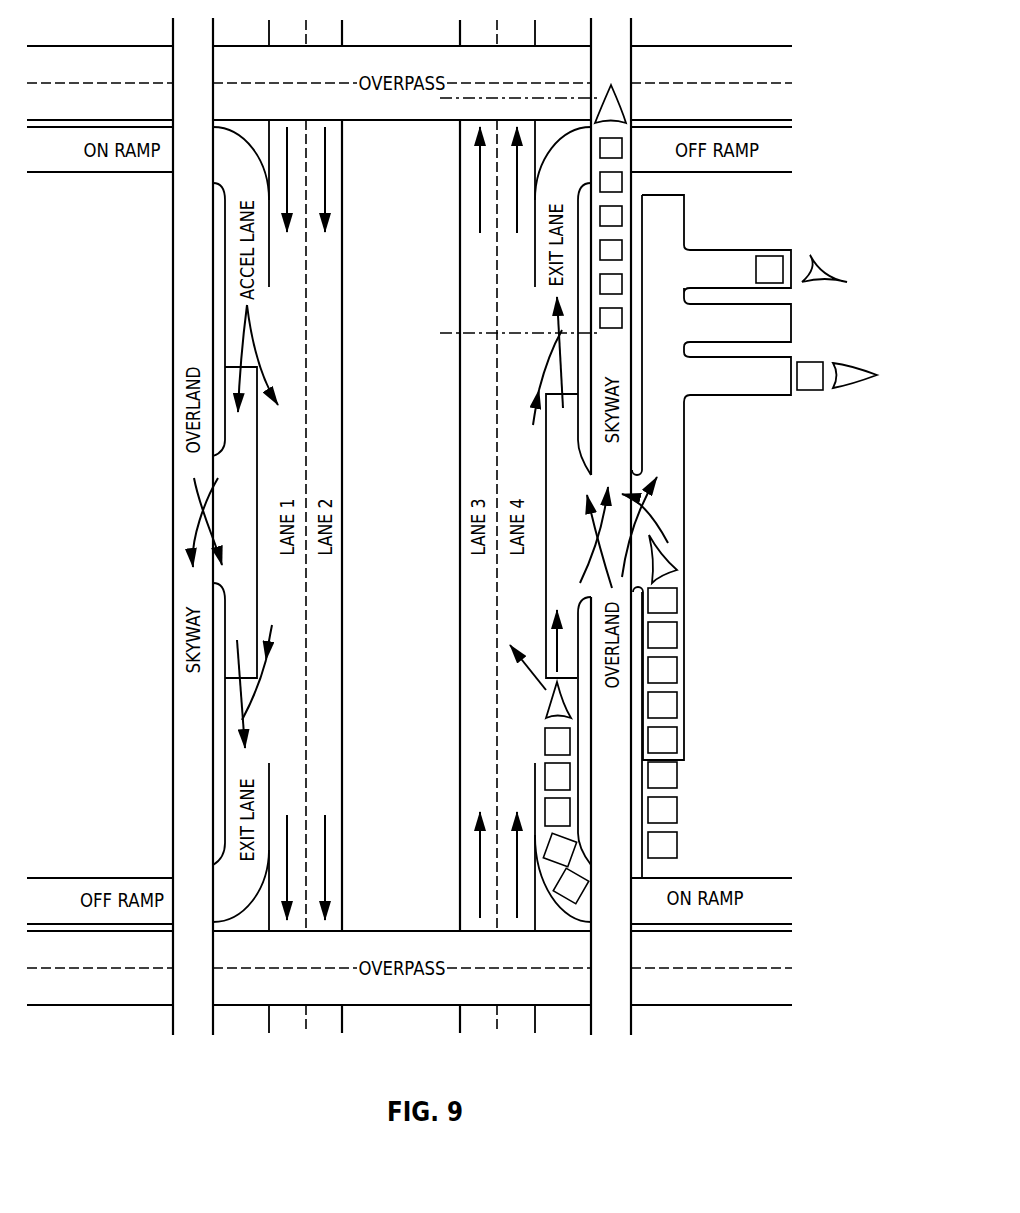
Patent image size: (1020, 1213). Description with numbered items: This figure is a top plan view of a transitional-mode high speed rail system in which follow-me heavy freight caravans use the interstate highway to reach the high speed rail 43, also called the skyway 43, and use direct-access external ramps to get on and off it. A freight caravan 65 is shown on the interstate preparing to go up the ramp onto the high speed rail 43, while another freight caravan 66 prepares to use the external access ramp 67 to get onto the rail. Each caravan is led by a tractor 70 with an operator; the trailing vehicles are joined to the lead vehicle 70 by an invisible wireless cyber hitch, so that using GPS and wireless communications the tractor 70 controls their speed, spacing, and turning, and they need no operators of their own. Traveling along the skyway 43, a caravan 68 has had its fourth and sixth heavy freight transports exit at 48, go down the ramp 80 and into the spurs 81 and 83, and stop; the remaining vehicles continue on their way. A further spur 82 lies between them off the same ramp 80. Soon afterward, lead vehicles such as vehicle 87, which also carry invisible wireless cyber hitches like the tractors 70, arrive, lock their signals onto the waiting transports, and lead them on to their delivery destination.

The high speed rail 43 is at (596, 365).
The exit point 48 is at (561, 550).
The freight caravan 65 is at (509, 757).
The freight caravan 66 is at (692, 848).
The external access ramp 67 is at (649, 515).
The caravan 68 is at (440, 98).
The tractor 70 is at (606, 84).
The ramp 80 is at (649, 422).
The spur 81 is at (721, 387).
The sign panel row 82 is at (718, 334).
The spur 83 is at (713, 282).
The caravan lead vehicle 87 is at (828, 266).